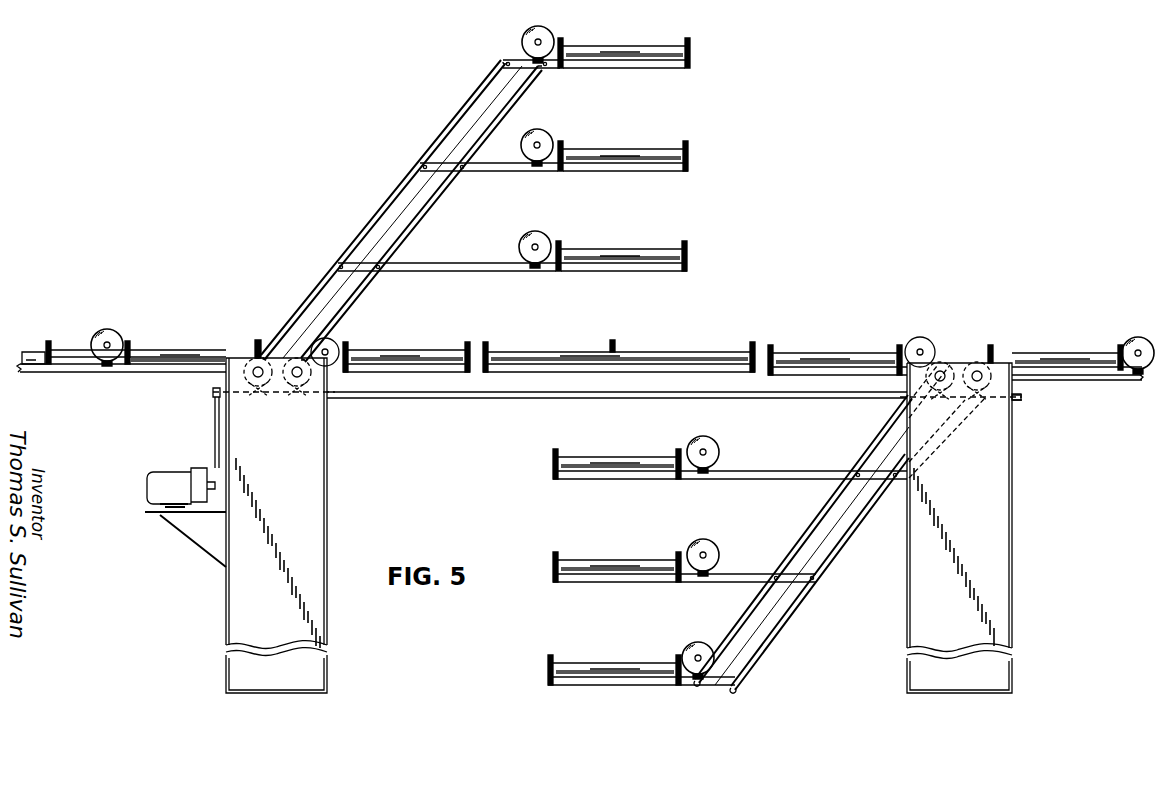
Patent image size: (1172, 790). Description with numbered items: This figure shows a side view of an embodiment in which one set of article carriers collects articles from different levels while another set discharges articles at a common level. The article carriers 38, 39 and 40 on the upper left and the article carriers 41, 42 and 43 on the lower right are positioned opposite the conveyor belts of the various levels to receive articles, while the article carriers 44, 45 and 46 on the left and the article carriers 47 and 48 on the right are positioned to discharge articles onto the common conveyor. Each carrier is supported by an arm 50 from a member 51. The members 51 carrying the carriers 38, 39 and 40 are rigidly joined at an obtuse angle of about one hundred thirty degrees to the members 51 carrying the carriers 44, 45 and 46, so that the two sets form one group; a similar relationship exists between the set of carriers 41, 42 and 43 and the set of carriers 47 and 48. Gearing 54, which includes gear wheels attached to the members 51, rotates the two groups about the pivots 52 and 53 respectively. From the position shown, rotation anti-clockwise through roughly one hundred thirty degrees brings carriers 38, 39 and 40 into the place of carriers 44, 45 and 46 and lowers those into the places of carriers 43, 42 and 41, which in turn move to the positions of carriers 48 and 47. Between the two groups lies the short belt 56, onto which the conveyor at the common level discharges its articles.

The article carrier 38 is at (688, 54).
The article carrier 39 is at (688, 160).
The article carrier 40 is at (690, 263).
The article carrier 41 is at (722, 456).
The article carrier 42 is at (722, 562).
The article carrier 43 is at (642, 660).
The article carrier 44 is at (24, 353).
The article carrier 45 is at (146, 355).
The article carrier 46 is at (380, 356).
The article carrier 47 is at (806, 358).
The article carrier 48 is at (1030, 358).
The arm 50 is at (548, 65).
The member 51 is at (390, 240).
The pivot 52 is at (297, 378).
The pivot 53 is at (977, 383).
The gearing 54 is at (248, 402).
The short belt 56 is at (662, 358).